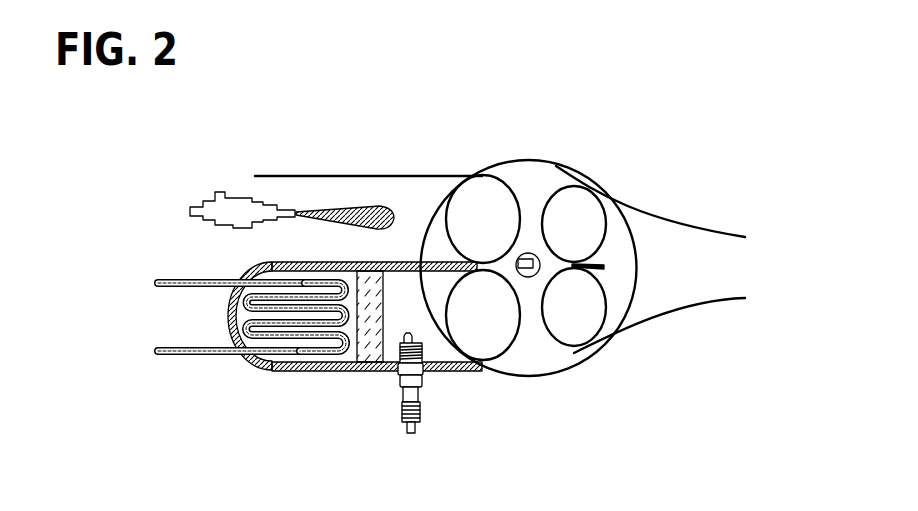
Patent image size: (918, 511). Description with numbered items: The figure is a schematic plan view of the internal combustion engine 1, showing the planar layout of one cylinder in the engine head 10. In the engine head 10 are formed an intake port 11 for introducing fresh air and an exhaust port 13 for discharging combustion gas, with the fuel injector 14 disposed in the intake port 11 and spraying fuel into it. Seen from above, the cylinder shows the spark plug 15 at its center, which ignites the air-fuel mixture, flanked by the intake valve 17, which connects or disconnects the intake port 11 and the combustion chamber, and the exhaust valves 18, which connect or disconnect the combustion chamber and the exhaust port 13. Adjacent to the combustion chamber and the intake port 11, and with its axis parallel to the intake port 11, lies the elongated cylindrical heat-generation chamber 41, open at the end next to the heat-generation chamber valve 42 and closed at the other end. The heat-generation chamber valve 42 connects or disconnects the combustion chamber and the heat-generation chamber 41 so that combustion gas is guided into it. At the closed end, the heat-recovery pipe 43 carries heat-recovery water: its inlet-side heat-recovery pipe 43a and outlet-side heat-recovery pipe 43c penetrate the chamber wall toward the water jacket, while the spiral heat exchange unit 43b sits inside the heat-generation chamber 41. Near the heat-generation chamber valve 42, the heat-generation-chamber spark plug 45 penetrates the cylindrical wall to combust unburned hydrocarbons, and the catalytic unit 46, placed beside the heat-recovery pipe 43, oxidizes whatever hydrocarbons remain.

The internal combustion engine 1 is at (727, 140).
The engine head 10 is at (530, 380).
The intake port 11 is at (300, 176).
The exhaust port 13 is at (660, 228).
The fuel injector 14 is at (213, 210).
The spark plug 15 is at (521, 259).
The intake valve 17 is at (483, 190).
The exhaust valve 18 is at (576, 197).
The heat-generation chamber 41 is at (393, 348).
The heat-generation chamber valve 42 is at (487, 347).
The heat-recovery pipe 43 is at (105, 226).
The inlet-side heat-recovery pipe 43a is at (158, 282).
The heat exchange unit 43b is at (305, 340).
The outlet-side heat-recovery pipe 43c is at (158, 350).
The heat-generation-chamber spark plug 45 is at (405, 423).
The catalytic unit 46 is at (357, 371).